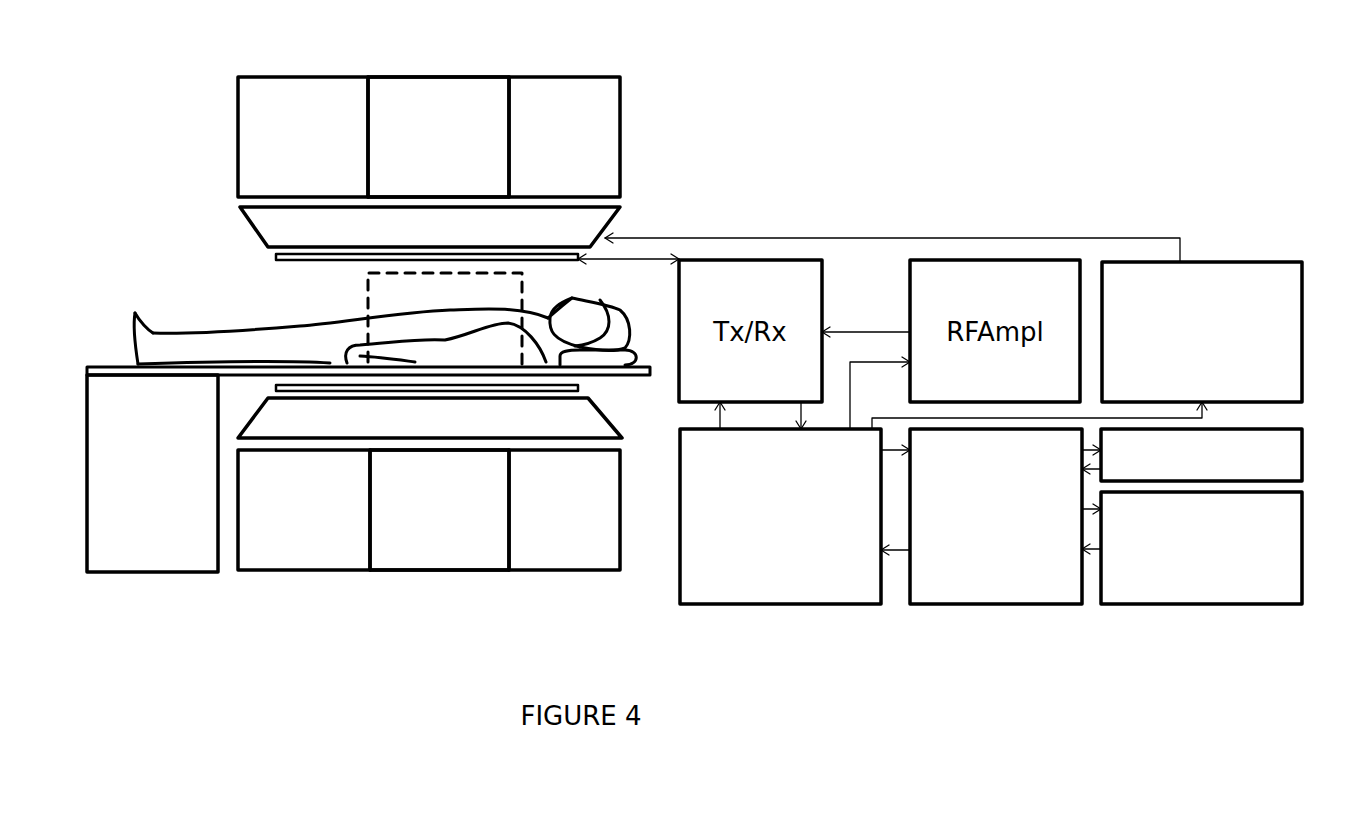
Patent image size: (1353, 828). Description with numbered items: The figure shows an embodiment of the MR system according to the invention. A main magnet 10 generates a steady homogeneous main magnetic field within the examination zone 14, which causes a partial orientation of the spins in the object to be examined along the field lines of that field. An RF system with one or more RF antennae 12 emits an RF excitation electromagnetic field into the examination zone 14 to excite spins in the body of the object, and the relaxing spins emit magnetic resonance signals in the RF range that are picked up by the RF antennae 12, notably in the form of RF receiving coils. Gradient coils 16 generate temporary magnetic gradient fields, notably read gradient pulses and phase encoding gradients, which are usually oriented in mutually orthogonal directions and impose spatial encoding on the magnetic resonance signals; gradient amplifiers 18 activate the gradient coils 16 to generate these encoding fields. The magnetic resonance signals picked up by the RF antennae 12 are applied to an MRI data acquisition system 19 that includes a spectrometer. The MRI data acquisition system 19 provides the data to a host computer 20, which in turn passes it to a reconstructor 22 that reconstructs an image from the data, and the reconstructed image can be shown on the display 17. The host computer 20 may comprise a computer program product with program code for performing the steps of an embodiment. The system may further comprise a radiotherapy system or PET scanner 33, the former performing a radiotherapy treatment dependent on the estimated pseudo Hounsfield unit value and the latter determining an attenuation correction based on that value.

The main magnet 10 is at (262, 77).
The radiotherapy system or PET scanner 33 is at (438, 323).
The gradient coils 16 is at (248, 212).
The RF antennae 12 is at (274, 257).
The examination zone 14 is at (368, 290).
The gradient amplifiers 18 is at (1248, 260).
The MRI data acquisition system 19 is at (680, 581).
The host computer 20 is at (996, 516).
The reconstructor 22 is at (1254, 412).
The display 17 is at (1280, 538).